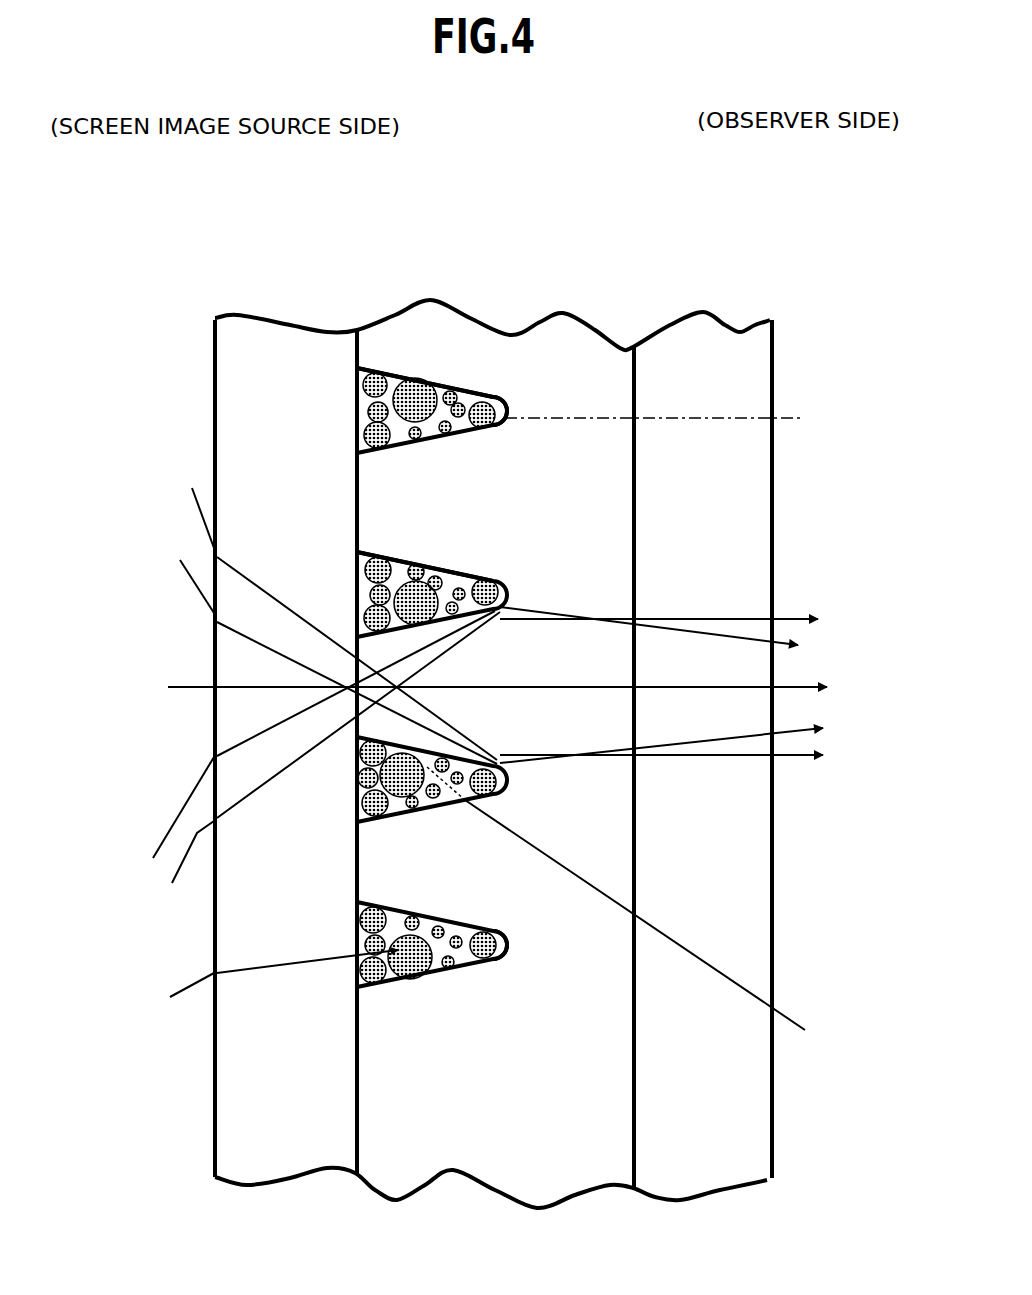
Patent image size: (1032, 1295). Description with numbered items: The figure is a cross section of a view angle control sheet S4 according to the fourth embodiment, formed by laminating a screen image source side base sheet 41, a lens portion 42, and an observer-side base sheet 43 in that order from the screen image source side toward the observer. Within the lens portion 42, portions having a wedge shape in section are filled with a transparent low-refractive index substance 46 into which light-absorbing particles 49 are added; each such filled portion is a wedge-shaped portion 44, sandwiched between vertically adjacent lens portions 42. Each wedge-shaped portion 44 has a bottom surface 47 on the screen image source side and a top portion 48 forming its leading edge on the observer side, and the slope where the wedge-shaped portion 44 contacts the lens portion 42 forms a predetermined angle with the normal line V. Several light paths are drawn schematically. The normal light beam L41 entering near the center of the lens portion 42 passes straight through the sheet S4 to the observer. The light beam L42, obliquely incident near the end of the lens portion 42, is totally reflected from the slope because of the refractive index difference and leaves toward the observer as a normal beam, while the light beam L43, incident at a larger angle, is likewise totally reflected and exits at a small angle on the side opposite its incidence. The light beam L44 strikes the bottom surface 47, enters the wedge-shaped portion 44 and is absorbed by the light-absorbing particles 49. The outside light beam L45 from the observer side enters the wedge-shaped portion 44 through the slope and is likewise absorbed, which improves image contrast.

The screen image source side base sheet 41 is at (265, 358).
The lens portion 42 is at (470, 348).
The observer-side base sheet 43 is at (680, 348).
The wedge-shaped portion 44 is at (380, 366).
The transparent low-refractive index substance 46 is at (365, 407).
The bottom surface 47 is at (355, 418).
The top portion 48 is at (507, 412).
The light-absorbing particles 49 is at (413, 392).
The view angle control sheet S4 is at (762, 264).
The normal line V is at (667, 418).
The normal light beam L41 is at (522, 688).
The light beam L42 is at (688, 621).
The light beam L43 is at (688, 636).
The light beam L44 is at (249, 980).
The outside light beam L45 is at (639, 925).